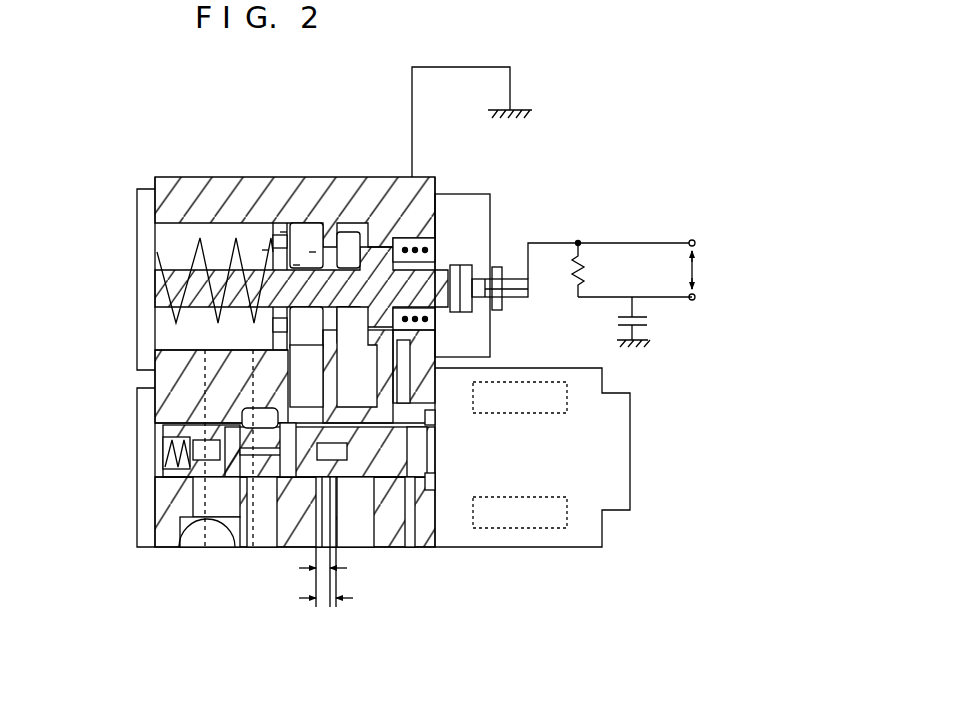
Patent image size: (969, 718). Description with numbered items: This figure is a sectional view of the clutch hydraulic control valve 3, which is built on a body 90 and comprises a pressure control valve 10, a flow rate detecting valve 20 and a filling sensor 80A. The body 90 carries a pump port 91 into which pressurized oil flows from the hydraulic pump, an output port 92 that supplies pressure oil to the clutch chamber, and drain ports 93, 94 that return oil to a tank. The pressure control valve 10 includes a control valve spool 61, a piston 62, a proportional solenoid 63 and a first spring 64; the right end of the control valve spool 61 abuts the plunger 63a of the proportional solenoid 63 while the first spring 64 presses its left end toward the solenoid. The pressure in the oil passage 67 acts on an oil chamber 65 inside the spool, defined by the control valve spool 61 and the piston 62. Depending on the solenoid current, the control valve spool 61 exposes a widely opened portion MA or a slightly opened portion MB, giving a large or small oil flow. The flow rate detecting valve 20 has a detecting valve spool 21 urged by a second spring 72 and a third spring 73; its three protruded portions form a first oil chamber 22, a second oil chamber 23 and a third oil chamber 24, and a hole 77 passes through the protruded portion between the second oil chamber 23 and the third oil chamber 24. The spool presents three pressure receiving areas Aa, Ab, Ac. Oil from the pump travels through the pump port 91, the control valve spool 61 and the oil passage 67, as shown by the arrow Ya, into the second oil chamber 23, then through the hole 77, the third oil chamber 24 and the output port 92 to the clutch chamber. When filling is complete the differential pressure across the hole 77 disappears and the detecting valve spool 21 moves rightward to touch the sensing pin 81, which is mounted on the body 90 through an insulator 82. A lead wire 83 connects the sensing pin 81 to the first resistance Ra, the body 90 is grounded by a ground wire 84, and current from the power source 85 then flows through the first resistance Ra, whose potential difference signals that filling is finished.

The clutch hydraulic control valve 3 is at (645, 459).
The pressure control valve 10 is at (112, 463).
The flow rate detecting valve 20 is at (112, 283).
The flow rate detecting valve spool 21 is at (156, 307).
The first oil chamber 22 is at (363, 240).
The second oil chamber 23 is at (310, 218).
The third oil chamber 24 is at (175, 238).
The pressure control valve spool 61 is at (424, 487).
The piston 62 is at (177, 513).
The proportional solenoid 63 is at (580, 542).
The plunger 63a is at (433, 453).
The first spring 64 is at (165, 462).
The oil chamber 65 is at (231, 517).
The oil passage 67 is at (263, 548).
The second spring 72 is at (158, 243).
The third spring 73 is at (436, 215).
The hole 77 is at (283, 232).
The filling sensor 80A is at (580, 243).
The sensing pin 81 is at (518, 278).
The insulator 82 is at (492, 267).
The lead wire 83 is at (558, 241).
The ground wire 84 is at (510, 95).
The power source 85 is at (654, 322).
The body 90 is at (157, 178).
The pump port 91 is at (365, 527).
The output port 92 is at (193, 545).
The drain port 93 is at (253, 550).
The drain port 94 is at (413, 532).
The pressure receiving area Aa is at (265, 255).
The pressure receiving area Ab is at (296, 265).
The pressure receiving area Ac is at (312, 252).
The first resistance Ra is at (586, 270).
The arrow Ya is at (347, 487).
The widely opened portion MA is at (308, 579).
The slightly opened portion MB is at (305, 577).